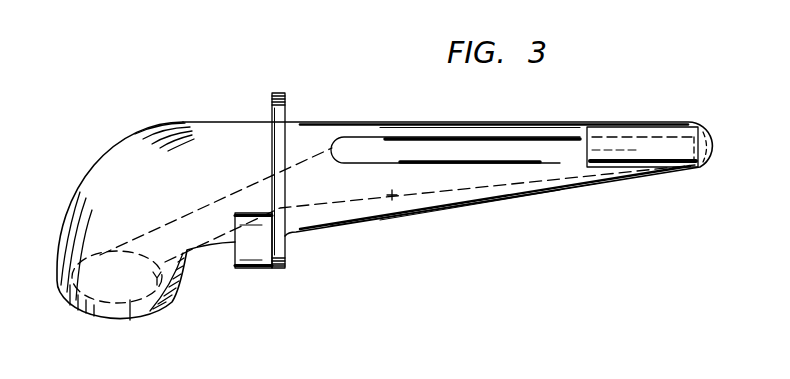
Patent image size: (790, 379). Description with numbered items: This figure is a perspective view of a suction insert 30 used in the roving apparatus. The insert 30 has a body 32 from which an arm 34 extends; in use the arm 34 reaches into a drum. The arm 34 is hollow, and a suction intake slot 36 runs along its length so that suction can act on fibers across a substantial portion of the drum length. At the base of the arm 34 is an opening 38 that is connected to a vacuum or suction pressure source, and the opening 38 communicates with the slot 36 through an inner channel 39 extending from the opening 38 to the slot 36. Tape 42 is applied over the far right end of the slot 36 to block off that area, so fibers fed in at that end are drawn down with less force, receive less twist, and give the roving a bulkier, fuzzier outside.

The insert 30 is at (252, 268).
The body 32 is at (195, 130).
The arm 34 is at (553, 128).
The suction intake slot 36 is at (443, 139).
The opening 38 is at (130, 316).
The inner channel 39 is at (394, 204).
The tape 42 is at (652, 130).